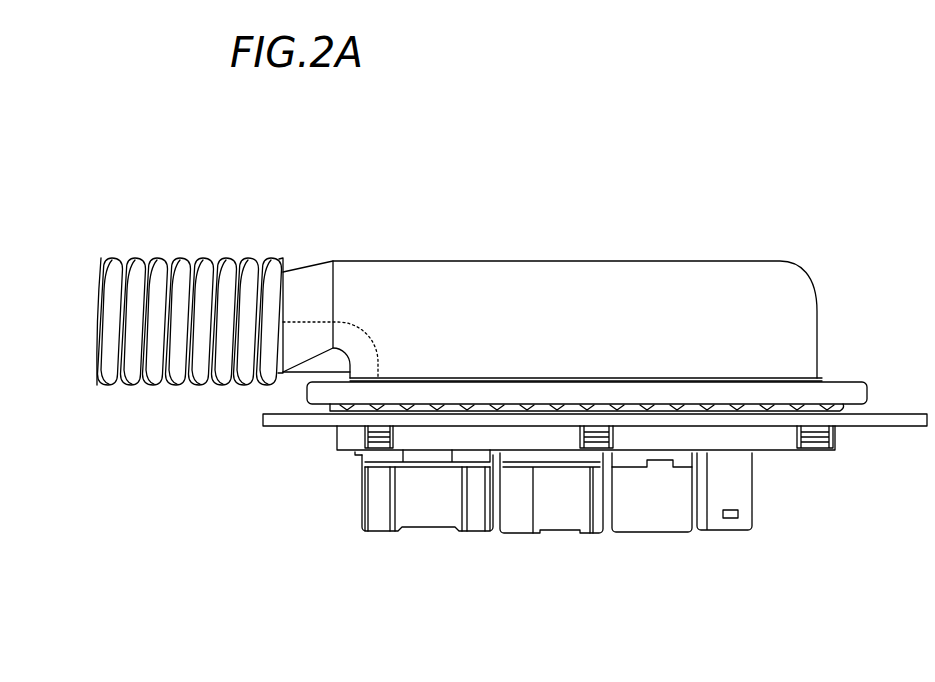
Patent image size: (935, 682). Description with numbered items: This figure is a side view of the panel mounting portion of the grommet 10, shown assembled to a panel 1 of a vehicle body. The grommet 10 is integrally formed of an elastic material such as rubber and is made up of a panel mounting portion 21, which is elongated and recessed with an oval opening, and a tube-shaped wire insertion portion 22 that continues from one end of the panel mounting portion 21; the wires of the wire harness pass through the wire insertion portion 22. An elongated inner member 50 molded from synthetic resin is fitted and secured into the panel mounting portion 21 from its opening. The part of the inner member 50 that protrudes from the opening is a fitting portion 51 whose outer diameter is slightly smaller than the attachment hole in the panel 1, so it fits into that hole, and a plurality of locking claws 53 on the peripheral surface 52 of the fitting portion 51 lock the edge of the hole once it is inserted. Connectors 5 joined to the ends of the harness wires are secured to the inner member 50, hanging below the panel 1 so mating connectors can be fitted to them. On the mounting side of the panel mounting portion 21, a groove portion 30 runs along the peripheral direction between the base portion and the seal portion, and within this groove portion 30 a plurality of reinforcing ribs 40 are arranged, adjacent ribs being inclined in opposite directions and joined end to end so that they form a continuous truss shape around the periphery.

The panel 1 is at (264, 421).
The connectors 5 is at (413, 533).
The grommet 10 is at (464, 224).
The panel mounting portion 21 is at (732, 261).
The wire insertion portion 22 is at (213, 251).
The groove portion 30 is at (653, 408).
The reinforcing ribs 40 is at (452, 410).
The inner member 50 is at (770, 453).
The fitting portion 51 is at (665, 443).
The peripheral surface 52 is at (727, 435).
The locking claws 53 is at (387, 426).